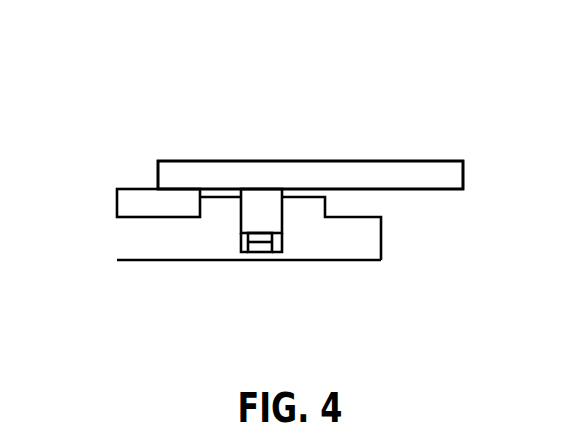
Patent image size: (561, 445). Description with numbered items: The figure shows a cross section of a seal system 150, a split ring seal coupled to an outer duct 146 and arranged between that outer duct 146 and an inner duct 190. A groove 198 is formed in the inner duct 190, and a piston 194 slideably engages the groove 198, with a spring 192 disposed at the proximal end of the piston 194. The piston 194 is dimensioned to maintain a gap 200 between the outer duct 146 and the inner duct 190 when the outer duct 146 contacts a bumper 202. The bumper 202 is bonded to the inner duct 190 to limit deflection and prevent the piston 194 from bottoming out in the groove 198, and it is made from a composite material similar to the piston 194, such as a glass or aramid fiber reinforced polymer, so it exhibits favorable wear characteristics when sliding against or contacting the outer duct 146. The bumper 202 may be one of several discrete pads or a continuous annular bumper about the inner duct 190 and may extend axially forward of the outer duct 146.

The seal system 150 is at (181, 113).
The outer duct 146 is at (438, 175).
The bumper 202 is at (135, 202).
The piston 194 is at (267, 218).
The groove 198 is at (239, 253).
The spring 192 is at (262, 252).
The gap 200 is at (315, 193).
The inner duct 190 is at (152, 261).